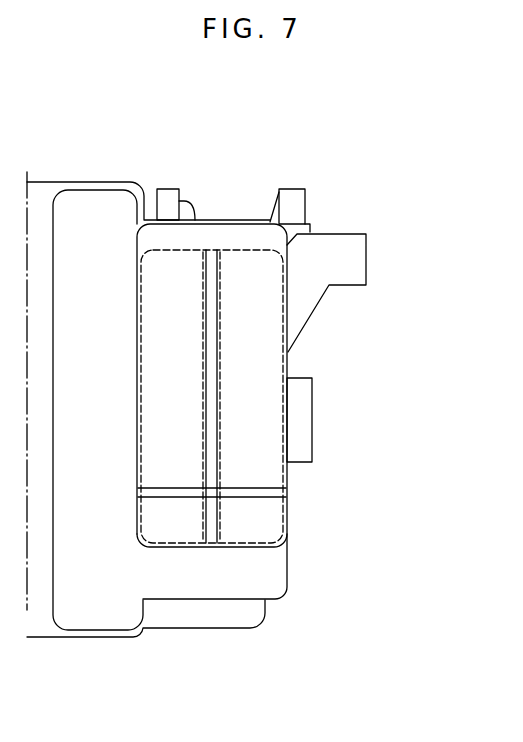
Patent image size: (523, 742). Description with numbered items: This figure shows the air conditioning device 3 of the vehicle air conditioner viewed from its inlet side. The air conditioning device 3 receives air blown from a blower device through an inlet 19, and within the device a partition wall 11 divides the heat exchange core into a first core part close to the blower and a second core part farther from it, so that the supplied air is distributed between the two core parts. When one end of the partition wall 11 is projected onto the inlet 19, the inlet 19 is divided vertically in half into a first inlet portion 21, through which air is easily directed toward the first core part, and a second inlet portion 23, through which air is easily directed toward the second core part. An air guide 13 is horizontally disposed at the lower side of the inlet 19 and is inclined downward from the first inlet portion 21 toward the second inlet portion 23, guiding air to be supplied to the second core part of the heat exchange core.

The air conditioning device 3 is at (385, 253).
The partition wall 11 is at (210, 415).
The air guide 13 is at (243, 493).
The inlet 19 is at (228, 168).
The first inlet portion 21 is at (171, 250).
The second inlet portion 23 is at (247, 250).